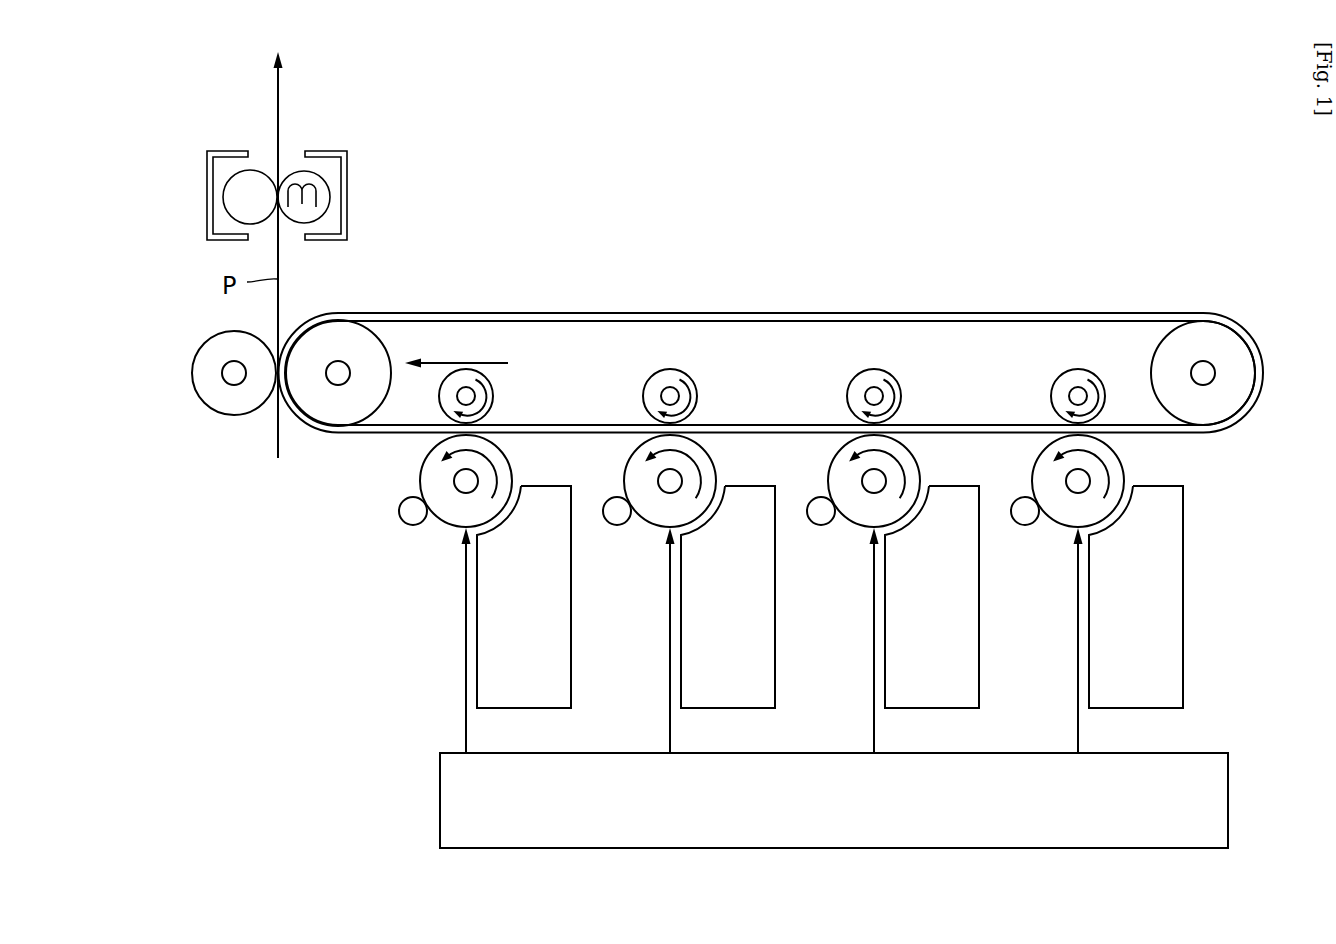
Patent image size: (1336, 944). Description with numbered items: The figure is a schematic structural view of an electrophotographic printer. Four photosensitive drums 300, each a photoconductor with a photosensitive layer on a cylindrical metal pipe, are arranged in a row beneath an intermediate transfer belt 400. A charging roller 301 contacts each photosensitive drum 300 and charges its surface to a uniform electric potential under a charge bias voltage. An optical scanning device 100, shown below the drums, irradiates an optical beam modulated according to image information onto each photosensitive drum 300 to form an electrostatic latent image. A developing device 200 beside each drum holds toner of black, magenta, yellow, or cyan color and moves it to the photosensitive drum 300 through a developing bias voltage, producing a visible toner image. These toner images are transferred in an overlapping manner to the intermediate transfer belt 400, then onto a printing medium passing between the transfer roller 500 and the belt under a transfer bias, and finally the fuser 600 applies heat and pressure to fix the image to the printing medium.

The optical scanning device 100 is at (1228, 800).
The developing device 200 is at (1135, 708).
The photosensitive drum 300 is at (1117, 455).
The charging roller 301 is at (1025, 526).
The intermediate transfer belt 400 is at (975, 313).
The transfer roller 500 is at (192, 372).
The fuser 600 is at (188, 208).